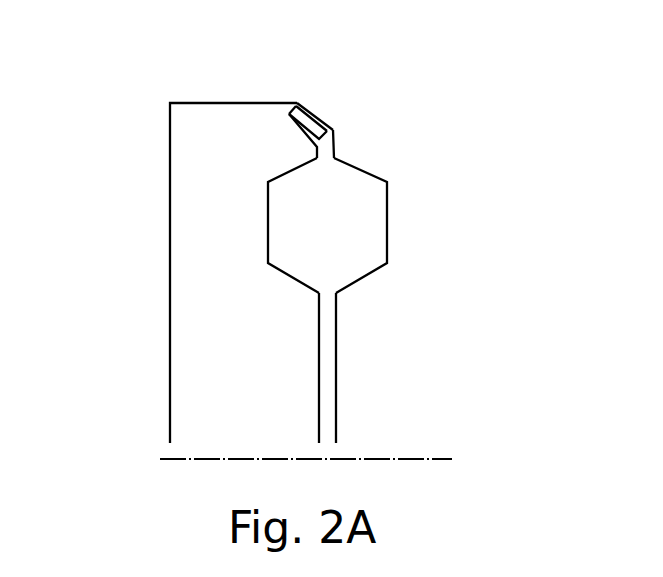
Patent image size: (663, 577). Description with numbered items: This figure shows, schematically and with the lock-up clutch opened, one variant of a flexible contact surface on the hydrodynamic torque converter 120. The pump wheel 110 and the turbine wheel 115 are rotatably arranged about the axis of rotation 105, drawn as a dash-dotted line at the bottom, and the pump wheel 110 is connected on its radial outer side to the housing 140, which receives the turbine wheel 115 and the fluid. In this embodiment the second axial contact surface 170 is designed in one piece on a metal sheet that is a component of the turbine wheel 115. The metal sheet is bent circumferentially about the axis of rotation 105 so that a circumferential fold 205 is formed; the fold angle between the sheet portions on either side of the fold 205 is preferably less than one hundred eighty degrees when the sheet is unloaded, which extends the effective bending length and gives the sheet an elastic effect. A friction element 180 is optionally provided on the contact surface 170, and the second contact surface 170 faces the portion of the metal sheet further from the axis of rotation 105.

The axis of rotation 105 is at (439, 458).
The pump wheel 110 is at (350, 310).
The turbine wheel 115 is at (284, 217).
The hydrodynamic torque converter 120 is at (450, 97).
The housing 140 is at (170, 156).
The second contact surface 170 is at (324, 125).
The friction element 180 is at (316, 99).
The fold 205 is at (276, 104).